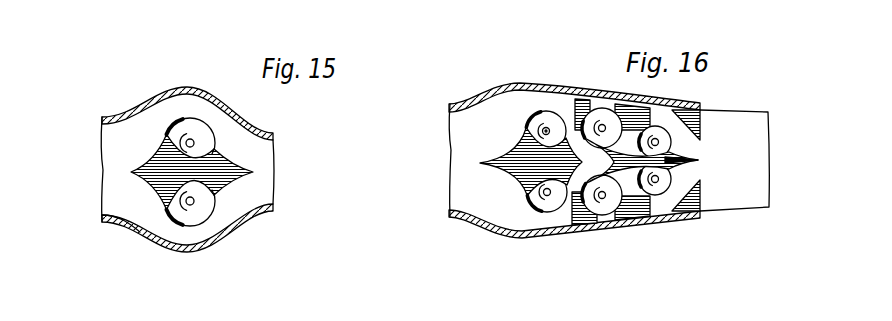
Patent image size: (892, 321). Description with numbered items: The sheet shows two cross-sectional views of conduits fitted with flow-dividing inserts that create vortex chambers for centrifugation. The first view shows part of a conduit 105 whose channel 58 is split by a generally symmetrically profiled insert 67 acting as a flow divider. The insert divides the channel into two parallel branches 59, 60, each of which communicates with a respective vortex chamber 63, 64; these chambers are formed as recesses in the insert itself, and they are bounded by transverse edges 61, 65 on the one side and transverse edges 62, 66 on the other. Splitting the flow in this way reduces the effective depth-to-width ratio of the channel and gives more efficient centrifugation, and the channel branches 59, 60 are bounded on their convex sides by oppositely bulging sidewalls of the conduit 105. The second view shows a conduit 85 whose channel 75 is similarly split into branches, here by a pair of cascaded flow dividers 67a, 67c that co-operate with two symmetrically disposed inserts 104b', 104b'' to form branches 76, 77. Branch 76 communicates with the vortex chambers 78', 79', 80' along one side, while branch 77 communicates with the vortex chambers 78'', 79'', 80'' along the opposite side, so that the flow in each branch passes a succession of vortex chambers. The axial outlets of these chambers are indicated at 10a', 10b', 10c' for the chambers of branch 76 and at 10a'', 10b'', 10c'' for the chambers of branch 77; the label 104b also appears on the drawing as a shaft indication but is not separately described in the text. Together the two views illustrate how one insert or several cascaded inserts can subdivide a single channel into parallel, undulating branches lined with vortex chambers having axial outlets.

In FIG. 15, the channel 58 is at (110, 147).
In FIG. 15, the channel branch 59 is at (200, 100).
In FIG. 15, the channel branch 60 is at (200, 237).
In FIG. 15, the transverse edge 61 is at (183, 119).
In FIG. 15, the transverse edge 62 is at (183, 226).
In FIG. 15, the vortex chamber 63 is at (189, 133).
In FIG. 15, the vortex chamber 64 is at (187, 203).
In FIG. 15, the transverse edge 65 is at (213, 150).
In FIG. 15, the transverse edge 66 is at (213, 200).
In FIG. 15, the insert 67 is at (161, 193).
In FIG. 15, the conduit 105 is at (117, 225).
In FIG. 16, the channel 75 is at (451, 167).
In FIG. 16, the channel branch 76 is at (554, 117).
In FIG. 16, the channel branch 77 is at (557, 200).
In FIG. 16, the vortex chamber 78' is at (549, 96).
In FIG. 16, the vortex chamber 78'' is at (535, 230).
In FIG. 16, the vortex chamber 79' is at (607, 77).
In FIG. 16, the vortex chamber 79'' is at (641, 161).
In FIG. 16, the vortex chamber 80' is at (702, 158).
In FIG. 16, the vortex chamber 80'' is at (734, 179).
In FIG. 16, the conduit 85 is at (663, 223).
In FIG. 16, the flow divider 67a is at (513, 177).
In FIG. 16, the flow divider 67c is at (622, 210).
In FIG. 16, the axial outlet 10a' is at (501, 128).
In FIG. 16, the axial outlet 10a'' is at (509, 249).
In FIG. 16, the axial outlet 10b' is at (604, 74).
In FIG. 16, the axial outlet 10b'' is at (632, 238).
In FIG. 16, the axial outlet 10c' is at (692, 115).
In FIG. 16, the axial outlet 10c'' is at (702, 179).
In FIG. 16, the rotor shaft 104b is at (549, 66).
In FIG. 16, the insert 104b' is at (572, 76).
In FIG. 16, the insert 104b'' is at (595, 247).